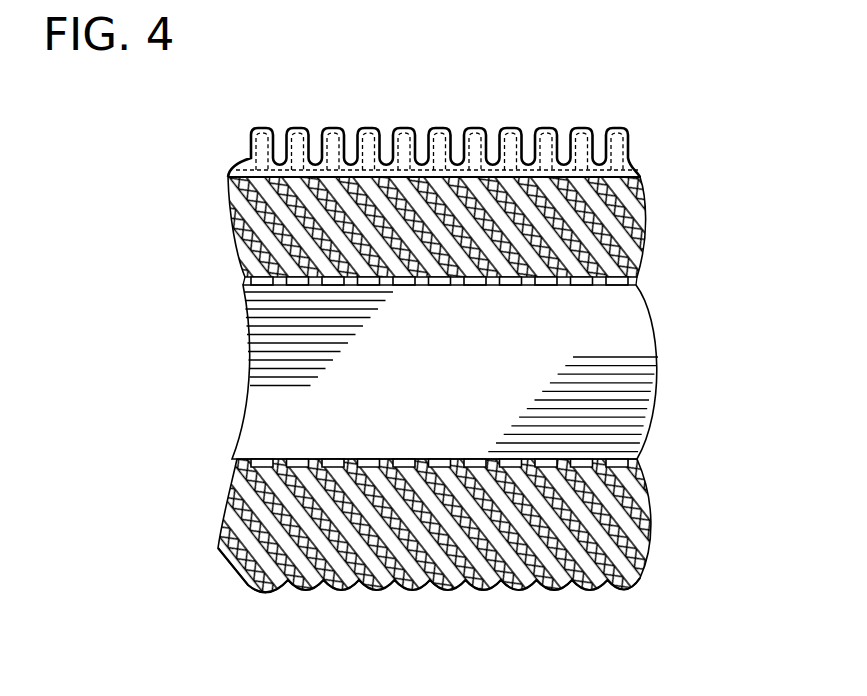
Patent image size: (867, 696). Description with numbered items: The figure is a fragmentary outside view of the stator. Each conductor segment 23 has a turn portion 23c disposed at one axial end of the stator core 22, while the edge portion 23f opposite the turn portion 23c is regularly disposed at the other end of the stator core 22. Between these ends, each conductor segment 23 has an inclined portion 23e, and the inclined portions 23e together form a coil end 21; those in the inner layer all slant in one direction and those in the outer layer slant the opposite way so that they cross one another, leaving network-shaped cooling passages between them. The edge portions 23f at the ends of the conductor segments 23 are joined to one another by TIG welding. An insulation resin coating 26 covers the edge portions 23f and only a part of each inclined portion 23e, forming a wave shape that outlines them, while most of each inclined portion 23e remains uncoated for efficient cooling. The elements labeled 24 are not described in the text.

The coil end 21 is at (489, 111).
The stator core 22 is at (633, 323).
The conductor segment 23 is at (524, 378).
The turn portion 23c is at (622, 587).
The inclined portion 23e is at (641, 176).
The edge portion 23f is at (600, 130).
The conductive pads 24 is at (638, 275).
The insulation resin coating 26 is at (330, 130).